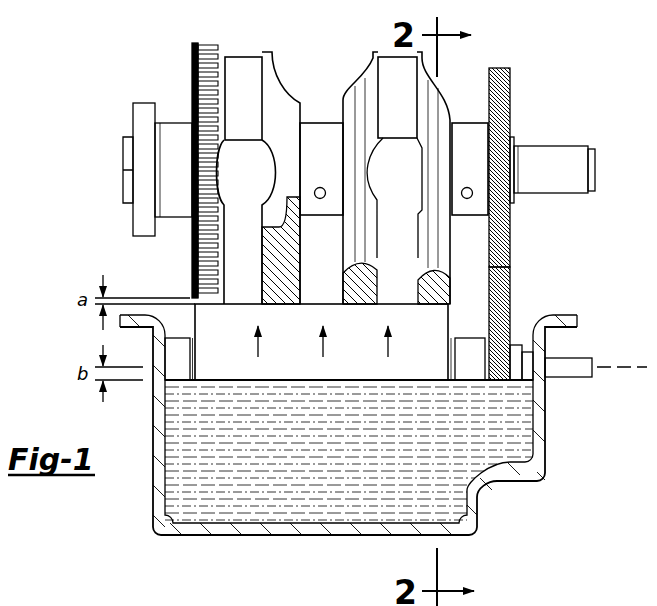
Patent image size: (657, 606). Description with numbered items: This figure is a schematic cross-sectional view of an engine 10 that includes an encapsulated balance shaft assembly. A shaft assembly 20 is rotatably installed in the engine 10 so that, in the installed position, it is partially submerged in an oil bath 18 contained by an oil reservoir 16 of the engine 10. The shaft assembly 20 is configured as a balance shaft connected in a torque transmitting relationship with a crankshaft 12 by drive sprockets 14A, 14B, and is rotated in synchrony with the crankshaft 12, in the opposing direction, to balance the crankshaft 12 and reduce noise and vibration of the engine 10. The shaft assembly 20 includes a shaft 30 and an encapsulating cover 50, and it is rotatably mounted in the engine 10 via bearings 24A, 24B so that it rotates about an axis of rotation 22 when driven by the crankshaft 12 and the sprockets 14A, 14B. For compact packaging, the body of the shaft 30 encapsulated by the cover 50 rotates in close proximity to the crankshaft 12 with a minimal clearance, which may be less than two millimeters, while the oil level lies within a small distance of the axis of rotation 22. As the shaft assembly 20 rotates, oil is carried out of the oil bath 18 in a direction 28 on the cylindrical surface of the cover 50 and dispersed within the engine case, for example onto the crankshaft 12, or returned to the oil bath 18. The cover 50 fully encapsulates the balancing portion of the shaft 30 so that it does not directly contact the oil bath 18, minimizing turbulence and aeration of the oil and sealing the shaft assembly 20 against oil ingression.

The engine 10 is at (111, 61).
The crankshaft 12 is at (111, 157).
The drive sprocket 14A is at (512, 83).
The drive sprocket 14B is at (512, 290).
The oil reservoir 16 is at (153, 497).
The oil bath 18 is at (458, 497).
The shaft assembly 20 is at (605, 352).
The axis of rotation 22 is at (620, 372).
The bearing 24A is at (175, 338).
The bearing 24B is at (472, 338).
The direction 28 is at (323, 345).
The shaft 30 is at (563, 380).
The encapsulating cover 50 is at (397, 304).